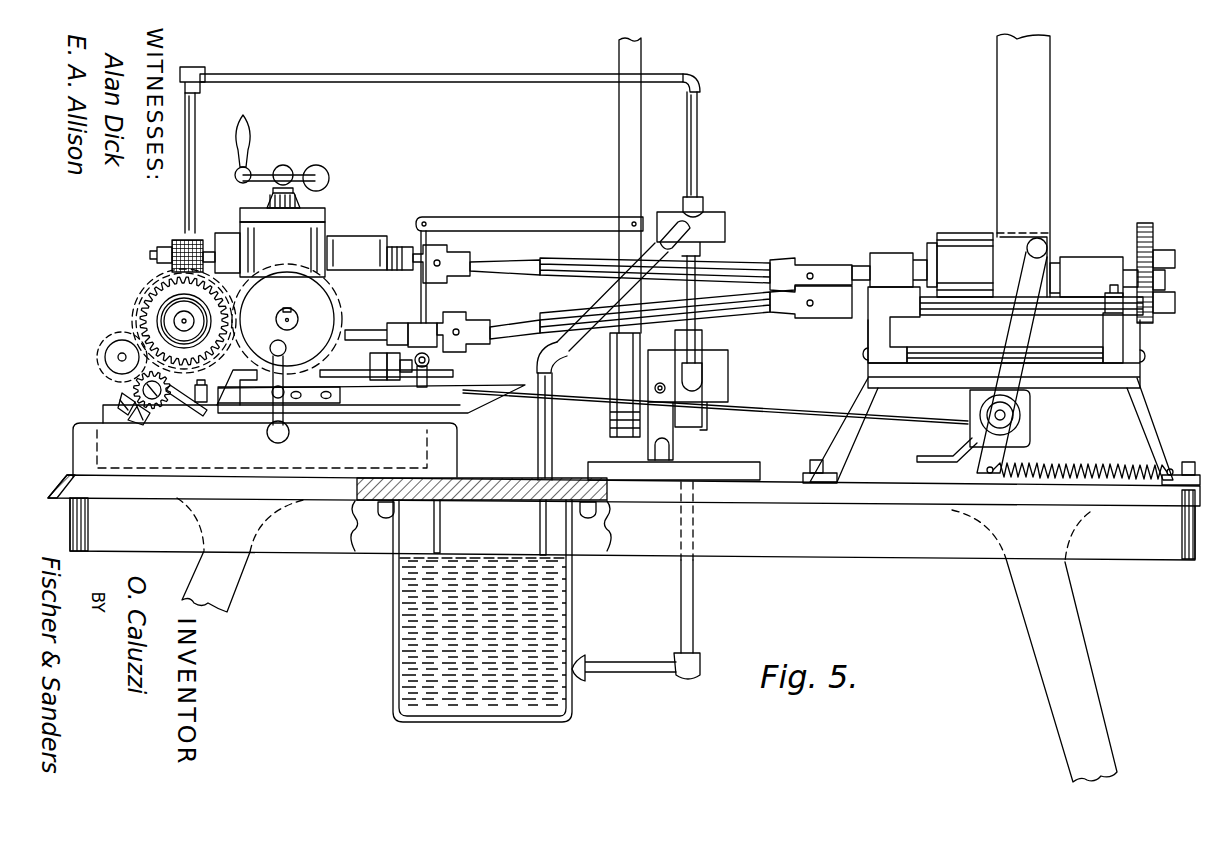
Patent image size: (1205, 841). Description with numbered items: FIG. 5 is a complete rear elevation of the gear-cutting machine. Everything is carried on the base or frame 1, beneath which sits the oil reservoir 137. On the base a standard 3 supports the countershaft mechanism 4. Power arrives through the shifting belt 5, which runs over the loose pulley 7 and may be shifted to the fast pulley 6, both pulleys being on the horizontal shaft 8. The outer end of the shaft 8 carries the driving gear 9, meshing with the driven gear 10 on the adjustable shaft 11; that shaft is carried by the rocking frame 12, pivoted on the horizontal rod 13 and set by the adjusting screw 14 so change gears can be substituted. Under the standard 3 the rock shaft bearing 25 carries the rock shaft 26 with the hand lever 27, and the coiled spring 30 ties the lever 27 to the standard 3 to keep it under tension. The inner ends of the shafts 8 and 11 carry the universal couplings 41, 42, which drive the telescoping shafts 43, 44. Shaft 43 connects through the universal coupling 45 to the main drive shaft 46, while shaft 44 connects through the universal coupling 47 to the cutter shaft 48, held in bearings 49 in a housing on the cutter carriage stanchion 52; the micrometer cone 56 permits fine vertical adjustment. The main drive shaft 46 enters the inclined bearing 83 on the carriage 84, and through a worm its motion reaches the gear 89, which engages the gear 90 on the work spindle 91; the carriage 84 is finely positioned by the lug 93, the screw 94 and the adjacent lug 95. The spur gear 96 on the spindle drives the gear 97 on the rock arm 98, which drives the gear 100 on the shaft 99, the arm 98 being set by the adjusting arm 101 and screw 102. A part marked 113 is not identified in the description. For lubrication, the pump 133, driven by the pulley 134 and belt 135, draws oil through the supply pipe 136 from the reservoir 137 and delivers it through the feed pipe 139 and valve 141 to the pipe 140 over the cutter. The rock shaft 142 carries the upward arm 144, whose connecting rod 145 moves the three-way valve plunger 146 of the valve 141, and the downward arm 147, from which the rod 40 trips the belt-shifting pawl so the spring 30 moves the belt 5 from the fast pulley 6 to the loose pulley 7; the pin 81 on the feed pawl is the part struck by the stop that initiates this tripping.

The base or frame 1 is at (624, 628).
The standard 3 is at (848, 448).
The countershaft mechanism 4 is at (866, 350).
The shifting belt 5 is at (997, 193).
The fast pulley 6 is at (1047, 245).
The loose pulley 7 is at (950, 235).
The horizontal shaft 8 is at (860, 265).
The driving gear 9 is at (1153, 250).
The driven gear 10 is at (1150, 322).
The adjustable shaft 11 is at (1075, 296).
The adjustable rocking frame 12 is at (894, 325).
The horizontal rod 13 is at (946, 348).
The adjusting screw 14 is at (1103, 338).
The rock shaft bearing 25 is at (1032, 425).
The rock shaft 26 is at (994, 415).
The hand lever 27 is at (1012, 362).
The coiled spring 30 is at (1096, 466).
The rod 40 is at (795, 414).
The universal coupling 41 is at (820, 260).
The universal coupling 42 is at (833, 323).
The telescoping shaft 43 is at (752, 314).
The telescoping shaft 44 is at (752, 260).
The universal coupling 45 is at (466, 307).
The main drive shaft 46 is at (408, 327).
The universal coupling 47 is at (442, 264).
The cutter shaft 48 is at (397, 247).
The bearings 49 is at (330, 236).
The cutter carriage stanchion 52 is at (282, 242).
The micrometer cone 56 is at (265, 202).
The pin 81 is at (172, 240).
The inclined bearing 83 is at (380, 332).
The carriage 84 is at (361, 364).
The gear 89 is at (315, 285).
The gear 90 is at (226, 320).
The work spindle 91 is at (182, 322).
The lug 93 is at (378, 381).
The screw 94 is at (395, 381).
The lug 95 is at (424, 387).
The spur gear 96 is at (150, 292).
The gear 97 is at (113, 345).
The rock arm 98 is at (120, 398).
The shaft 99 is at (152, 400).
The gear 100 is at (143, 420).
The adjusting arm 101 is at (203, 418).
The screw 102 is at (208, 402).
The handle lever 113 is at (290, 432).
The pump 133 is at (728, 380).
The pulley 134 is at (610, 428).
The belt 135 is at (619, 182).
The supply pipe 136 is at (695, 607).
The reservoir 137 is at (572, 612).
The feed pipe 139 is at (686, 296).
The pipe 140 is at (325, 73).
The valve 141 is at (725, 212).
The rock shaft 142 is at (429, 361).
The upwardly extending arm 144 is at (420, 293).
The connecting rod 145 is at (532, 221).
The three-way valve plunger 146 is at (652, 214).
The arm 147 is at (440, 376).